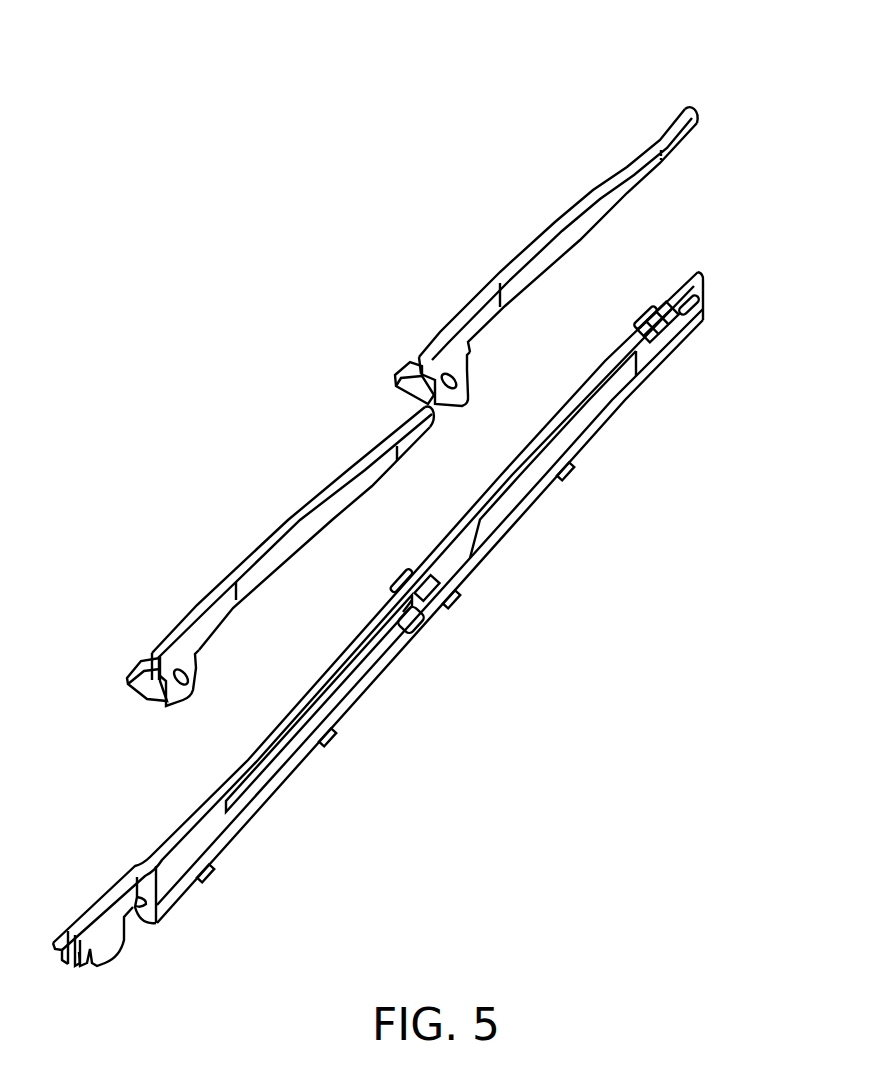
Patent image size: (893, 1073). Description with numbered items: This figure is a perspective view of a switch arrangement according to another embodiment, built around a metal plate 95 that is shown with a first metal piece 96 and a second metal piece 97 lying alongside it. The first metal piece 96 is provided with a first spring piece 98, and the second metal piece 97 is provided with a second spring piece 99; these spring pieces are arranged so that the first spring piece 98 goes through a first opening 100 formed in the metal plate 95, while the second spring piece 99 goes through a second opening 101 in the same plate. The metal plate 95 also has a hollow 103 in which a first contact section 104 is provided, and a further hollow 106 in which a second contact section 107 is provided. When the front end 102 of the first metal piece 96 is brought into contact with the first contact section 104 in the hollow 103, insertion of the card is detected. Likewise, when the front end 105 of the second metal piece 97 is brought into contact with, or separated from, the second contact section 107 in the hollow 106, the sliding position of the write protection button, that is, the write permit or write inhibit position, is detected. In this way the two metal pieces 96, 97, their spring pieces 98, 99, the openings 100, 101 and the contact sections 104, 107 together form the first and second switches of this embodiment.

The metal plate 95 is at (421, 616).
The first metal piece 96 is at (546, 216).
The second metal piece 97 is at (280, 543).
The first spring piece 98 is at (563, 240).
The second spring piece 99 is at (285, 561).
The first opening 100 is at (608, 412).
The second opening 101 is at (293, 757).
The front end 102 is at (683, 109).
The hollow 103 is at (703, 300).
The first contact section 104 is at (657, 342).
The front end 105 is at (421, 409).
The hollow 106 is at (422, 608).
The second contact section 107 is at (419, 622).